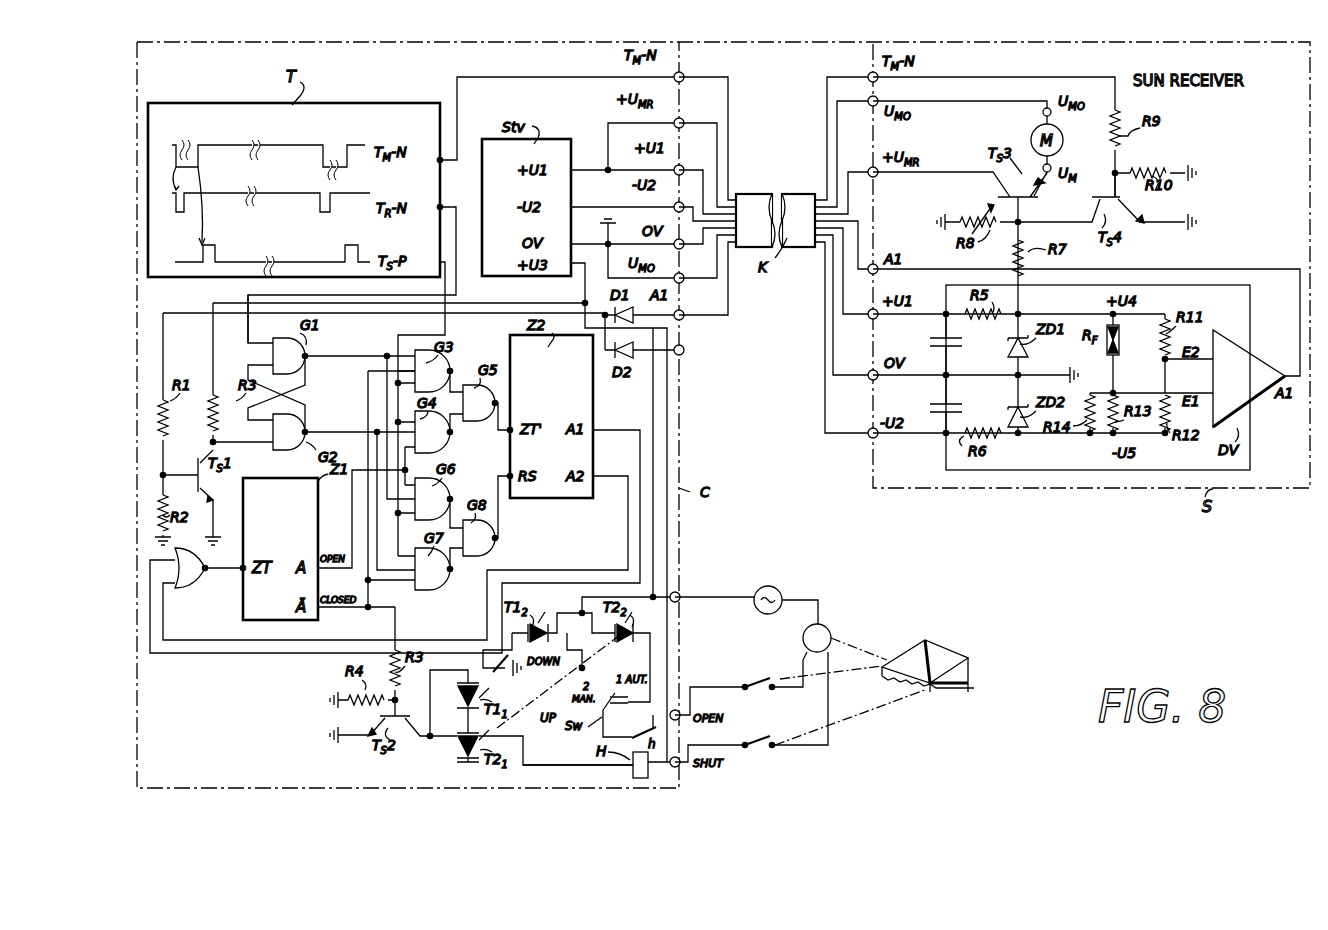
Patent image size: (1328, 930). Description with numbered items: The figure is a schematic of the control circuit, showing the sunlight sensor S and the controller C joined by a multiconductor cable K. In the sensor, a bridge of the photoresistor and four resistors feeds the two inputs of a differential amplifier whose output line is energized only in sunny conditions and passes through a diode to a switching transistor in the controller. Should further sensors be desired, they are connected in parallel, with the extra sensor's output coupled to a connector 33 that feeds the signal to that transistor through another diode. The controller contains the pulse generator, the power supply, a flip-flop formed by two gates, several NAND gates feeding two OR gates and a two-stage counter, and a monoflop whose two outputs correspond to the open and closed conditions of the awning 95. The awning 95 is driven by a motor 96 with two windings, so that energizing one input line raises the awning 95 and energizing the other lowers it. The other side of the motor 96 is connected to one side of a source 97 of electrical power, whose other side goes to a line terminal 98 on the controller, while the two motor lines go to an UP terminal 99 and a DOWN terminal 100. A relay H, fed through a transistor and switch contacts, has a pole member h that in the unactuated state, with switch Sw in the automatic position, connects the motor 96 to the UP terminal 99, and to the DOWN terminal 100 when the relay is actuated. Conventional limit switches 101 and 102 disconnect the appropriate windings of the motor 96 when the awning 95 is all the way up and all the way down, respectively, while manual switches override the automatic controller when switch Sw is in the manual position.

The connector 33 is at (684, 350).
The awning 95 is at (937, 637).
The motor 96 is at (830, 628).
The source of electrical power 97 is at (776, 588).
The line terminal 98 is at (680, 593).
The UP terminal 99 is at (690, 687).
The DOWN terminal 100 is at (678, 768).
The limit switch 101 is at (763, 666).
The limit switch 102 is at (766, 725).